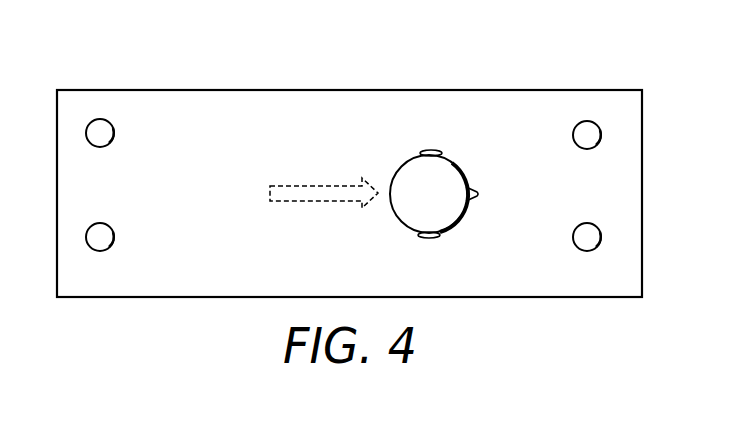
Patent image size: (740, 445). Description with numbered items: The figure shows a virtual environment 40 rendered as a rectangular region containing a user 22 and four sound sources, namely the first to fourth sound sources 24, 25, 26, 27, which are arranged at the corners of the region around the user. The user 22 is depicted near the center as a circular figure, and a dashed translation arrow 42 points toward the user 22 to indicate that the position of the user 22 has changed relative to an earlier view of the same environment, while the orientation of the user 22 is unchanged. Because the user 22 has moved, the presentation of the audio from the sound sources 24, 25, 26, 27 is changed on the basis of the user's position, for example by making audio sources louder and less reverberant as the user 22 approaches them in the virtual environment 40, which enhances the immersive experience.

The virtual environment 40 is at (597, 74).
The user 22 is at (402, 172).
The first sound source 24 is at (114, 133).
The second sound source 25 is at (114, 237).
The third sound source 26 is at (573, 135).
The fourth sound source 27 is at (573, 237).
The translation arrow 42 is at (290, 201).